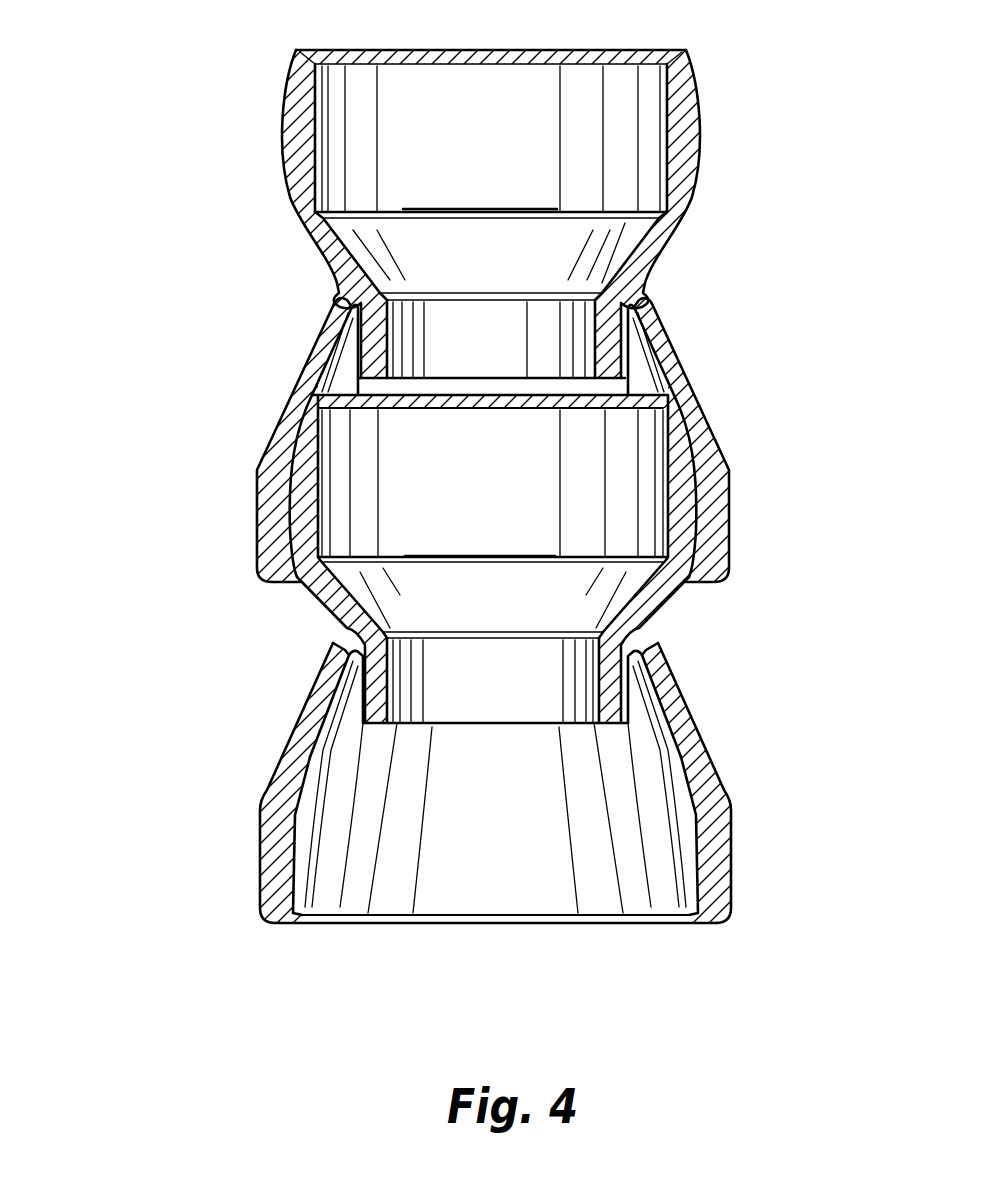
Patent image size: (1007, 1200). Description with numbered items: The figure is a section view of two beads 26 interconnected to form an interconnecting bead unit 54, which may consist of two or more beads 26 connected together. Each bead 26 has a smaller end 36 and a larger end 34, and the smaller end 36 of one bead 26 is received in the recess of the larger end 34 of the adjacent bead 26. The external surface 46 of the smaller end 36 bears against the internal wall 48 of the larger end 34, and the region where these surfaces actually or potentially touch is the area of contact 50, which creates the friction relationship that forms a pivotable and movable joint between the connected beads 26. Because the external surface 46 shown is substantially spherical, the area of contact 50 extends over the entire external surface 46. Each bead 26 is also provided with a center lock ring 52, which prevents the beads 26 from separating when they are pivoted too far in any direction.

The bead 26 is at (212, 279).
The larger end 34 is at (728, 793).
The smaller end 36 is at (255, 153).
The external surface 46 is at (278, 98).
The internal wall 48 is at (287, 522).
The area of contact 50 is at (350, 637).
The center lock ring 52 is at (603, 352).
The interconnecting bead unit 54 is at (742, 147).